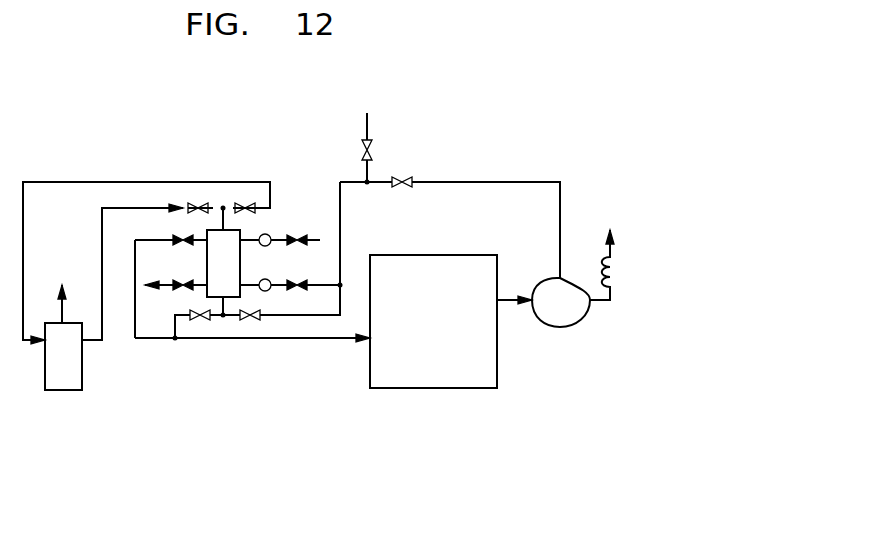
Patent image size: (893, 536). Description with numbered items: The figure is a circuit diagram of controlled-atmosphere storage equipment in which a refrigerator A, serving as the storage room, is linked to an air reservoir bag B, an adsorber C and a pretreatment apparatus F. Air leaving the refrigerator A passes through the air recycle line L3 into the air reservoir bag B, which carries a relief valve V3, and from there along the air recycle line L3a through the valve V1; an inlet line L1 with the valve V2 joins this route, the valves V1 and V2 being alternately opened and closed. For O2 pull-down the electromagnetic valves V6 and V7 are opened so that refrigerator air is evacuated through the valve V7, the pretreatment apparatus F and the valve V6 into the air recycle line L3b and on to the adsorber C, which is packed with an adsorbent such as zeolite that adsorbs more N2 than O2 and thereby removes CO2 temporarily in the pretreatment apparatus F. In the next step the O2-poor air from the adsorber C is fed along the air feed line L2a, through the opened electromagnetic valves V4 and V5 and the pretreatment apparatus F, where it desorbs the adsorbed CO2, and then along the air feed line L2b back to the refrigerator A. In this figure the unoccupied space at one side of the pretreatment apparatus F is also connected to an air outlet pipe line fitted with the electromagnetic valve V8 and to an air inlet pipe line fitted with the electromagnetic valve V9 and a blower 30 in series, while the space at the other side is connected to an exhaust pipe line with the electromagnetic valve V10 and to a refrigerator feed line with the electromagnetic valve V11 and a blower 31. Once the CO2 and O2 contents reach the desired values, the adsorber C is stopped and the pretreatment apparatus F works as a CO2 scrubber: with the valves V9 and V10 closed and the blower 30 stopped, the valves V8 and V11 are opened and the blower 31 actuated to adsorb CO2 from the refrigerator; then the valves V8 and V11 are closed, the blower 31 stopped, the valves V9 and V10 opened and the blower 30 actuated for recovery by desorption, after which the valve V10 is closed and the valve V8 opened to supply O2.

The inlet line L1 is at (362, 120).
The air feed line L2a is at (102, 249).
The air feed line L2b is at (326, 338).
The air recycle line L3 is at (509, 298).
The air recycle line L3a is at (495, 182).
The air recycle line L3b is at (78, 182).
The valve V1 is at (406, 178).
The valve V2 is at (371, 149).
The relief valve V3 is at (617, 268).
The electromagnetic valve V4 is at (198, 203).
The electromagnetic valve V5 is at (204, 321).
The electromagnetic valve V6 is at (246, 203).
The electromagnetic valve V7 is at (251, 321).
The electromagnetic valve V8 is at (178, 237).
The electromagnetic valve V9 is at (299, 236).
The electromagnetic valve V10 is at (178, 280).
The electromagnetic valve V11 is at (299, 282).
The blower 30 is at (266, 233).
The blower 31 is at (265, 281).
The refrigerator A is at (410, 388).
The air reservoir bag B is at (545, 318).
The adsorber C is at (52, 391).
The pretreatment apparatus F is at (207, 297).